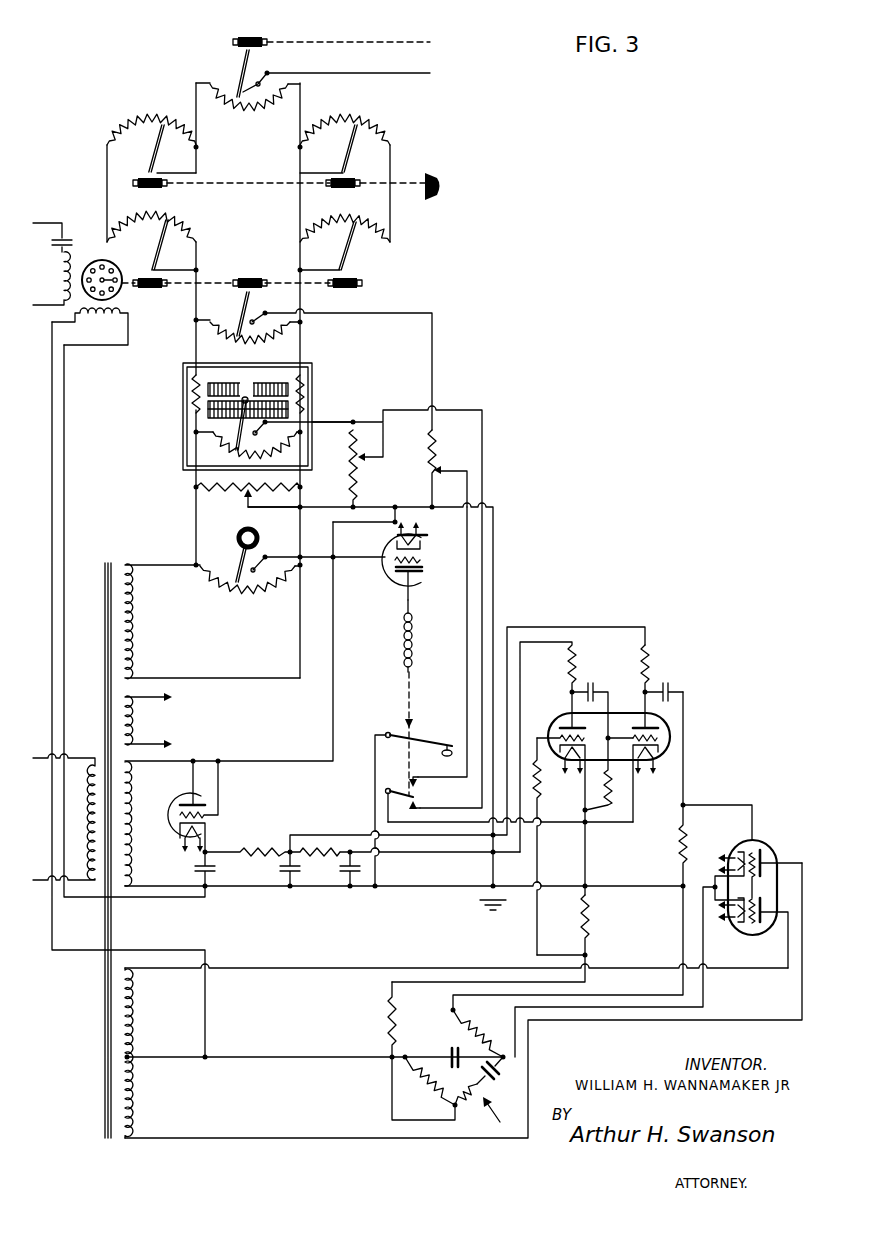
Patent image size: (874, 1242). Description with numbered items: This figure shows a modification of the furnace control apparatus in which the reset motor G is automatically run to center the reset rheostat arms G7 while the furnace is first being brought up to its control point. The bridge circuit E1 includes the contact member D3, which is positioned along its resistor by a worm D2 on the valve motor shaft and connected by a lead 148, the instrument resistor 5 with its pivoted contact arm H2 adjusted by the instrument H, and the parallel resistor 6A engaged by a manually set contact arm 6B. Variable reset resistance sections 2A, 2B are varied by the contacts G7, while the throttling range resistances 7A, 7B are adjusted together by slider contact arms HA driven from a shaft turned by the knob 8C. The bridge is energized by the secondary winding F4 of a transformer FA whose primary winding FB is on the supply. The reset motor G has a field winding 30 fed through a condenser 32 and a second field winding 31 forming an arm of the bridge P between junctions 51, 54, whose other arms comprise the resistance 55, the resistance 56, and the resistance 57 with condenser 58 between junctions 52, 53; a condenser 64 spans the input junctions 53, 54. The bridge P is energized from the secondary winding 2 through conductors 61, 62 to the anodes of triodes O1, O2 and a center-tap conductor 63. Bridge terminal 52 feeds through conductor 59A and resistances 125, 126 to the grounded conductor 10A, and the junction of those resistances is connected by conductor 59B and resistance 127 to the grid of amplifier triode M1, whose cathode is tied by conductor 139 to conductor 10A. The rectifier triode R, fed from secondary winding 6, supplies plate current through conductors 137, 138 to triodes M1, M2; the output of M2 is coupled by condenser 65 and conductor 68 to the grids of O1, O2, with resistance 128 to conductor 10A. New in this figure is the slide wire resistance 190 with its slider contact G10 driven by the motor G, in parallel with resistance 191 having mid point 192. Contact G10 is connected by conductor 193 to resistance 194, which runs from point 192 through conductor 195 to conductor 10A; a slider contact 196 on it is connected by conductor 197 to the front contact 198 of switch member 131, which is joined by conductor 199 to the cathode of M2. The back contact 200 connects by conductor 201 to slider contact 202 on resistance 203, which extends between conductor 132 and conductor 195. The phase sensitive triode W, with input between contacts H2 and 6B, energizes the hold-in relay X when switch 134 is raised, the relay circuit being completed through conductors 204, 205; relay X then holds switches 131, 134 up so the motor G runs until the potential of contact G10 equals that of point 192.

The bridge circuit E1 is at (167, 77).
The second worm D2 is at (251, 35).
The contact member D3 is at (240, 70).
The conductor 148 is at (374, 64).
The variable throttling range adjustment resistance 7A is at (137, 118).
The variable throttling range adjustment resistance 7B is at (352, 118).
The slider contact arms HA is at (156, 152).
The knob 8C is at (439, 183).
The variable reset resistance section 2A is at (180, 222).
The variable reset resistance section 2B is at (316, 221).
The contact G7 is at (366, 260).
The condenser 32 is at (71, 236).
The reset motor G is at (98, 259).
The field winding 30 is at (61, 272).
The field winding 31 is at (108, 321).
The slider contact G10 is at (236, 328).
The slide wire resistance 190 is at (259, 346).
The conductor 193 is at (372, 313).
The instrument H is at (184, 388).
The conductor 132 is at (334, 421).
The conductor 201 is at (456, 410).
The slider contact 202 is at (365, 454).
The resistance 194 is at (437, 446).
The resistance 203 is at (358, 483).
The conductor 195 is at (420, 506).
The slider contact 196 is at (437, 481).
The pivoted contact arm H2 is at (221, 444).
The resistance 191 is at (250, 483).
The mid point 192 is at (246, 502).
The contact arm 6B is at (238, 556).
The conductor 197 is at (466, 546).
The triode W is at (388, 575).
The resistor 6A is at (251, 592).
The relay X is at (413, 648).
The secondary winding F4 is at (128, 623).
The instrument resistor 5 is at (132, 723).
The conductor 205 is at (333, 714).
The switch 134 is at (424, 734).
The conductor 138 is at (603, 626).
The conductor 137 is at (558, 648).
The triode M1 is at (561, 716).
The triode M2 is at (637, 716).
The condenser 65 is at (667, 683).
The switch member 131 is at (405, 788).
The conductor 204 is at (374, 780).
The front contact 198 is at (420, 784).
The back contact 200 is at (420, 804).
The rectifier triode R is at (178, 797).
The resistance 127 is at (541, 789).
The conductor 68 is at (686, 777).
The primary winding FB is at (90, 815).
The secondary winding 6 is at (130, 851).
The conductor 199 is at (542, 825).
The conductor 139 is at (588, 856).
The resistance 128 is at (678, 851).
The triode O1 is at (769, 845).
The conductor 10A is at (393, 888).
The resistance 126 is at (590, 921).
The conductor 59B is at (536, 939).
The triode O2 is at (752, 936).
The conductor 62 is at (347, 967).
The conductor 63 is at (266, 1057).
The conductor 61 is at (287, 1138).
The resistance 125 is at (386, 1010).
The junction point 51 is at (451, 1010).
The resistance 55 is at (476, 1028).
The junction 54 is at (407, 1054).
The condenser 64 is at (455, 1048).
The junction 53 is at (499, 1071).
The condenser 58 is at (496, 1081).
The resistance 57 is at (468, 1086).
The resistance 56 is at (425, 1092).
The conductor 59A is at (391, 1086).
The junction 52 is at (459, 1108).
The bridge P is at (499, 1116).
The transformer FA is at (103, 1058).
The secondary winding 2 is at (130, 1095).